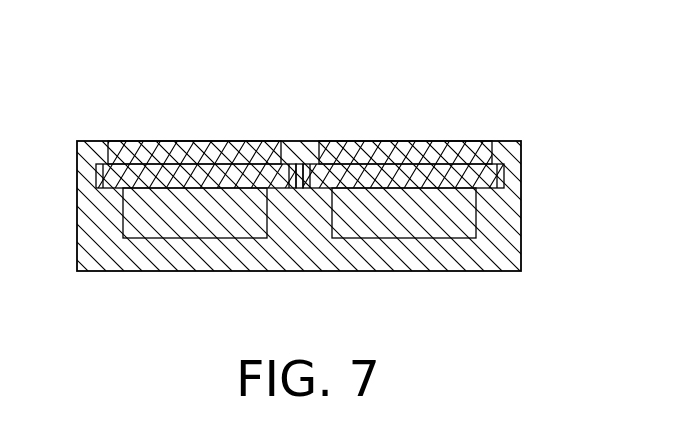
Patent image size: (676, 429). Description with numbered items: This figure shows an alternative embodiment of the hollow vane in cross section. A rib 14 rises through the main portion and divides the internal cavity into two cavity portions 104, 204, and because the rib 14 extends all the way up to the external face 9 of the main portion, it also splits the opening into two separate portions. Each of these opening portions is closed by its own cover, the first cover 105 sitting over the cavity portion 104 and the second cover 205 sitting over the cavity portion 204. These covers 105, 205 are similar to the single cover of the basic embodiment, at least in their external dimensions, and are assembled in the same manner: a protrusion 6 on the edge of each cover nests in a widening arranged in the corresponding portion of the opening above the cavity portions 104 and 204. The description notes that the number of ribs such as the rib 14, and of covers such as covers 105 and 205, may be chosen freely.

The rib 14 is at (312, 217).
The cover 105 is at (172, 140).
The cover 205 is at (423, 140).
The protrusion 6 is at (100, 176).
The external face 9 is at (300, 141).
The cavity portion 104 is at (212, 227).
The cavity portion 204 is at (420, 227).